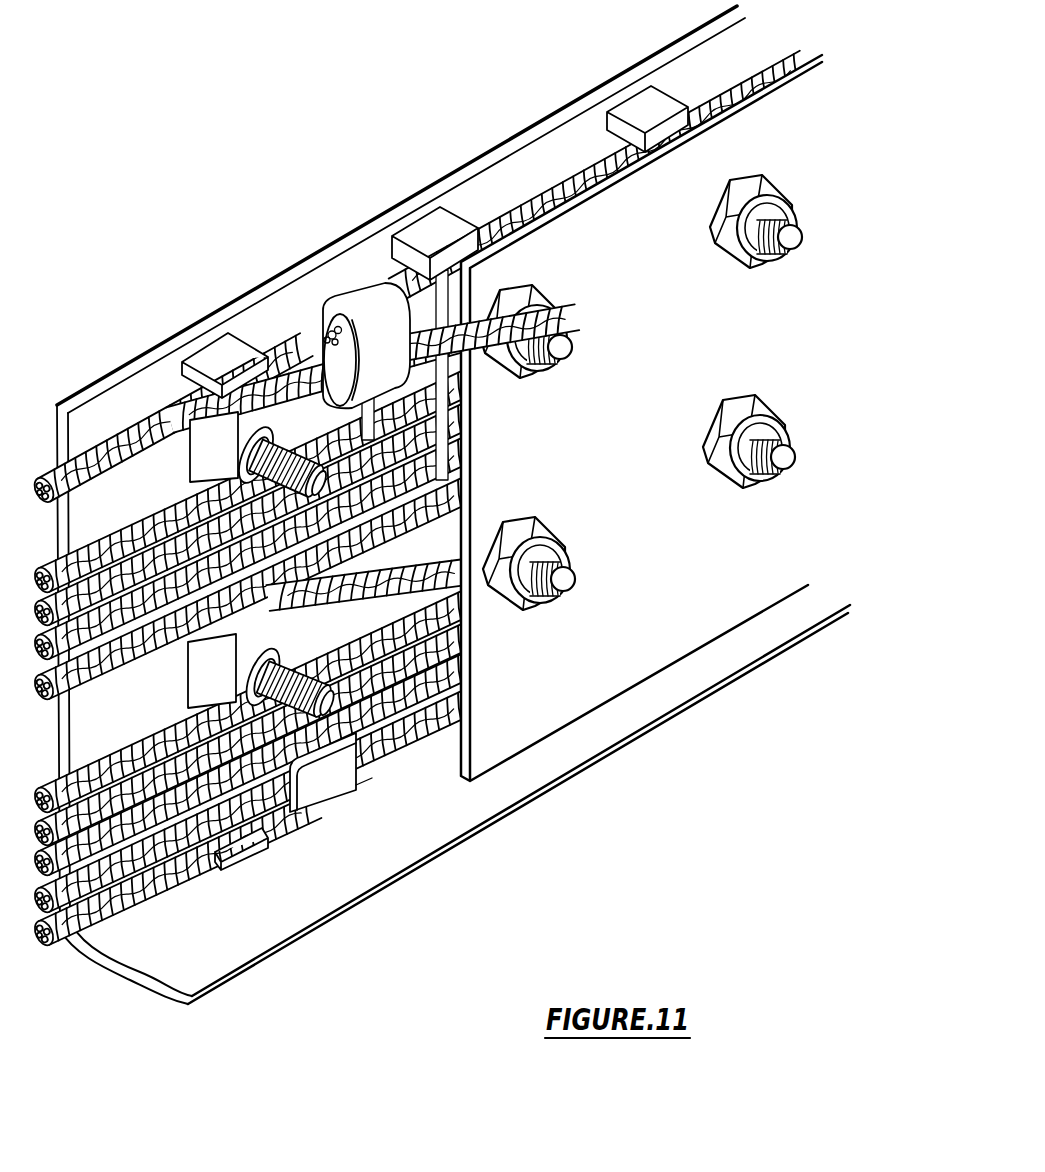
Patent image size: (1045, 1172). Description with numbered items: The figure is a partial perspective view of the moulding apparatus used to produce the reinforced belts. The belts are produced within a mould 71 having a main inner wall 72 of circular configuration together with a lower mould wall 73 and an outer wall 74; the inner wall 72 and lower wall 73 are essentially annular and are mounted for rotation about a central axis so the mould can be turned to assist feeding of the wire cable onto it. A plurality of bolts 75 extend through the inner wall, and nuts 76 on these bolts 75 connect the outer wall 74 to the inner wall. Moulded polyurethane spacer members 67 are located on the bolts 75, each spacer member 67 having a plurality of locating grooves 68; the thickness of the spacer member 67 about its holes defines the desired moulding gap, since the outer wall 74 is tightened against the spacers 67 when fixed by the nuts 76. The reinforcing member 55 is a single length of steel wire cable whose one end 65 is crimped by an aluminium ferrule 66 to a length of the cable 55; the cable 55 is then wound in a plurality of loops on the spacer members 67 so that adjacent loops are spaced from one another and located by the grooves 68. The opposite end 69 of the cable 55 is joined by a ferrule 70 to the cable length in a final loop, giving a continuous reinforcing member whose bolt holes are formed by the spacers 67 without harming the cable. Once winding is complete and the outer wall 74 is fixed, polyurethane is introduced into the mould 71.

The reinforcing member 55 is at (290, 355).
The end of the cable 65 is at (313, 330).
The ferrule 66 is at (363, 297).
The spacer member 67 is at (243, 340).
The locating grooves 68 is at (168, 478).
The end of the cable 69 is at (303, 808).
The ferrule 70 is at (358, 786).
The mould 71 is at (430, 150).
The main inner wall 72 is at (520, 158).
The lower mould wall 73 is at (478, 800).
The outer wall 74 is at (658, 440).
The bolts 75 is at (298, 448).
The nuts 76 is at (710, 205).